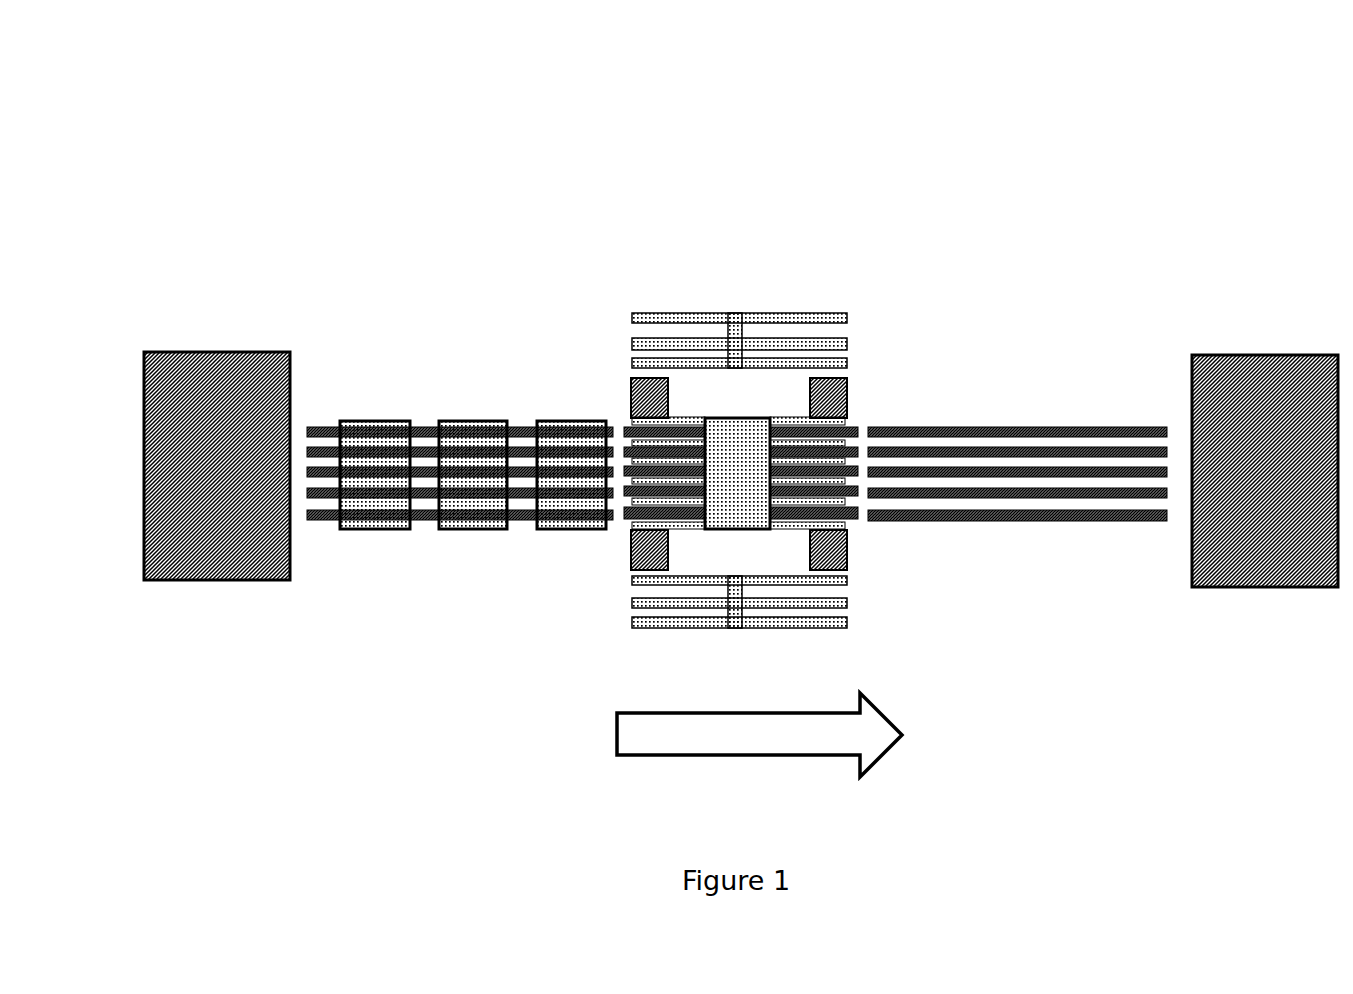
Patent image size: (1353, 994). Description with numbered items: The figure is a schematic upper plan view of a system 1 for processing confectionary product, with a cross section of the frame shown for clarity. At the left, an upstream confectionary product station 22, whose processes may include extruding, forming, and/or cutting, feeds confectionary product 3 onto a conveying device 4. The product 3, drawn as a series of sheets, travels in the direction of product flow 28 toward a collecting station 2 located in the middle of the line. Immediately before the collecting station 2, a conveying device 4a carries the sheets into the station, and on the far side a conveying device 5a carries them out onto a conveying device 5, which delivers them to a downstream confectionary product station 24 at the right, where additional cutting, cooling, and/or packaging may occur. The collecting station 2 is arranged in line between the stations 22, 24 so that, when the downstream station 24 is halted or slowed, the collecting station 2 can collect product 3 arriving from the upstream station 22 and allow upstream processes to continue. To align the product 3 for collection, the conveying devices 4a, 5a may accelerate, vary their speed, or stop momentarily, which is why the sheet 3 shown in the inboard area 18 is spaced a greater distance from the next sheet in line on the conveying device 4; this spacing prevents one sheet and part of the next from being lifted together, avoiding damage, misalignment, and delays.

The system 1 is at (428, 268).
The collecting station 2 is at (719, 311).
The confectionary product 3 is at (478, 450).
The conveying device 4 is at (527, 424).
The conveying device 4a is at (630, 425).
The conveying device 5 is at (975, 426).
The conveying device 5a is at (856, 423).
The inboard area 18 is at (742, 416).
The upstream confectionary product station 22 is at (233, 350).
The downstream confectionary product station 24 is at (1265, 353).
The direction of product flow 28 is at (751, 745).